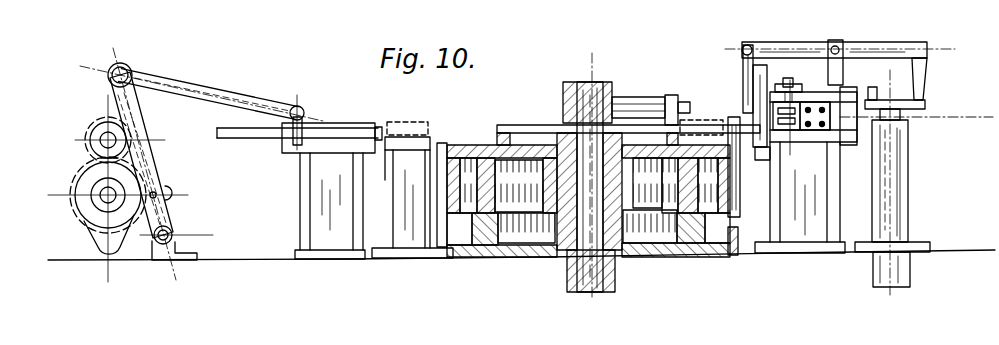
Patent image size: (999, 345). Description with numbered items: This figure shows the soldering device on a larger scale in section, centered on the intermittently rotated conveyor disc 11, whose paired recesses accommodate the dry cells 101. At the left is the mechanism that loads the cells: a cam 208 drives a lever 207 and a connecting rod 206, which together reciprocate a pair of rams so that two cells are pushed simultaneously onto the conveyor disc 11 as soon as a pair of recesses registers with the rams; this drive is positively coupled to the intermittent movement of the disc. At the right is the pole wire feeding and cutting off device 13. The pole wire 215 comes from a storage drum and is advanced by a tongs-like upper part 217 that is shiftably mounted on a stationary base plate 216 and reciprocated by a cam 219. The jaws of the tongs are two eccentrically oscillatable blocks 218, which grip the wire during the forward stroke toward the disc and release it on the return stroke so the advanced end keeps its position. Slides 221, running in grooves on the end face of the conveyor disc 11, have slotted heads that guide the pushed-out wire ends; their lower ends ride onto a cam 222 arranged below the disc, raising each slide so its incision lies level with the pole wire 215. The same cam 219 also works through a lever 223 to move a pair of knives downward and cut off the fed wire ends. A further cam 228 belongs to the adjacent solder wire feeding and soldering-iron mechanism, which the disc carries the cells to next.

The conveyor disc 11 is at (529, 100).
The pole wire feeding and cutting off device 13 is at (714, 68).
The dry cells 101 is at (401, 123).
The connecting rod 206 is at (224, 96).
The lever 207 is at (147, 145).
The cam 208 is at (86, 178).
The pole wire 215 is at (943, 116).
The stationary base plate 216 is at (812, 135).
The tongs-like upper part 217 is at (797, 96).
The eccentrically oscillatable blocks 218 is at (778, 88).
The cam 219 is at (893, 100).
The slides 221 is at (735, 178).
The cam 222 is at (739, 248).
The lever 223 is at (806, 47).
The cam 228 is at (742, 88).